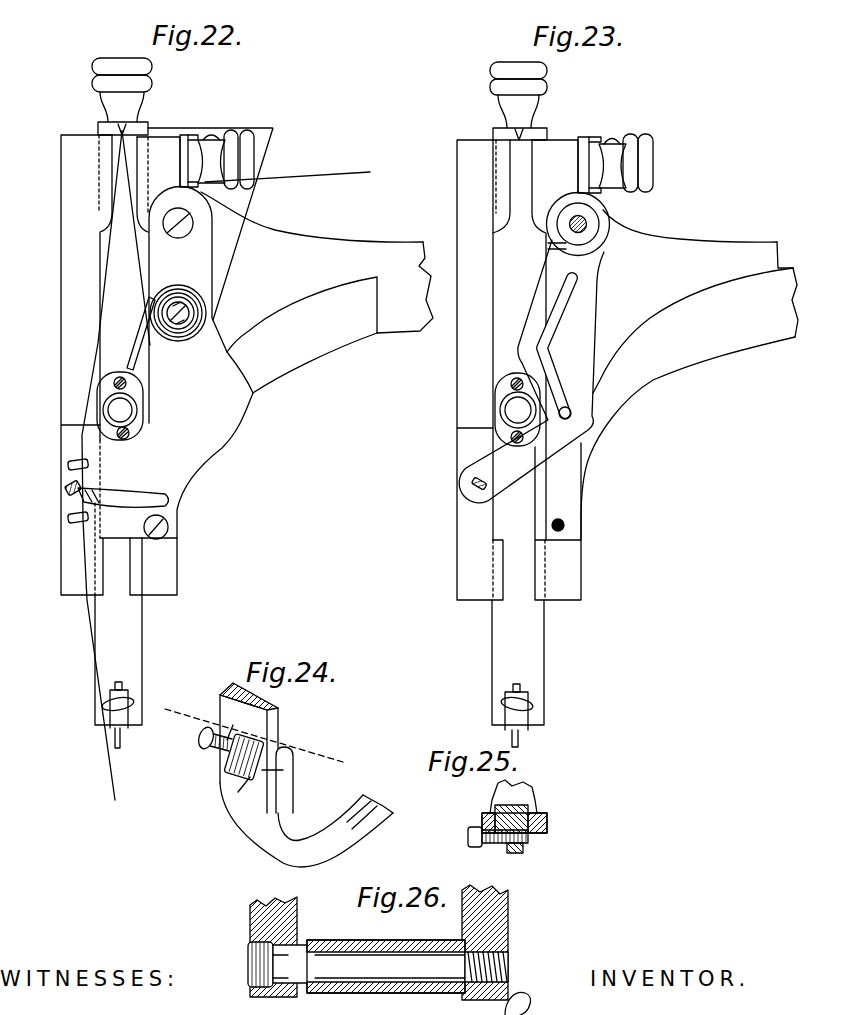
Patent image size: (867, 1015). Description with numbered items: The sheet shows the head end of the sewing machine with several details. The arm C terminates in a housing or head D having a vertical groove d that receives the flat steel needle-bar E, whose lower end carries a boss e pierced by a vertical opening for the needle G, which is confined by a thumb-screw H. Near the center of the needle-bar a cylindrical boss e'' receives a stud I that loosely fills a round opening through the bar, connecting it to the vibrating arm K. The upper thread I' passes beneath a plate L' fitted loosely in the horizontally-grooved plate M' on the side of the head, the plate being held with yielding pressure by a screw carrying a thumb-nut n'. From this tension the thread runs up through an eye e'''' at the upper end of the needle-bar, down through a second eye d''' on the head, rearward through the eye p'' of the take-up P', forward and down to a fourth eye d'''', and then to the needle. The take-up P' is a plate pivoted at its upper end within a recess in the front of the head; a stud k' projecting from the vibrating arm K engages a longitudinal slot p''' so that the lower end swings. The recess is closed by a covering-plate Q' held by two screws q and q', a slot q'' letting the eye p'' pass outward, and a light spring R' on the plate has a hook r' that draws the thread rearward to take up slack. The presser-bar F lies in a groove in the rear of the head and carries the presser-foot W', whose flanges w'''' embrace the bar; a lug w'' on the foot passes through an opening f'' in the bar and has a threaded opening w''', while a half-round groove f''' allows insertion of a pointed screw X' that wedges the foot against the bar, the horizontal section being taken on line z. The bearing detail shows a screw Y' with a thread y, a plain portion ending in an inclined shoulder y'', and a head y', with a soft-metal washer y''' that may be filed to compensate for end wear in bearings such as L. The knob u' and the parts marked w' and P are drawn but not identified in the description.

In FIG. 22, the knob u' is at (129, 90).
In FIG. 23, the knob u' is at (527, 95).
In FIG. 22, the eye e'''' is at (172, 125).
In FIG. 23, the eye e'''' is at (536, 128).
In FIG. 22, the housing or head D is at (129, 365).
In FIG. 23, the housing or head D is at (526, 370).
In FIG. 22, the vertical groove d is at (116, 465).
In FIG. 23, the vertical groove d is at (479, 340).
In FIG. 22, the needle-bar E is at (121, 431).
In FIG. 23, the needle-bar E is at (519, 432).
In FIG. 22, the horizontally-grooved plate M' is at (176, 161).
In FIG. 23, the horizontally-grooved plate M' is at (576, 165).
In FIG. 22, the plate L' is at (211, 159).
In FIG. 23, the plate L' is at (612, 164).
In FIG. 22, the thumb-nut n' is at (239, 159).
In FIG. 23, the thumb-nut n' is at (645, 163).
In FIG. 22, the hook r' is at (245, 214).
In FIG. 22, the upper thread I' is at (293, 172).
In FIG. 22, the covering-plate Q' is at (201, 305).
In FIG. 22, the screw q is at (195, 225).
In FIG. 23, the screw q is at (596, 238).
In FIG. 22, the arm C is at (305, 365).
In FIG. 23, the arm C is at (689, 375).
In FIG. 22, the vibrating arm K is at (302, 314).
In FIG. 23, the vibrating arm K is at (693, 330).
In FIG. 22, the light spring R' is at (198, 313).
In FIG. 22, the take-up P' is at (141, 333).
In FIG. 23, the take-up P' is at (550, 348).
In FIG. 22, the cylindrical boss e'' is at (120, 407).
In FIG. 23, the cylindrical boss e'' is at (517, 410).
In FIG. 22, the stud I is at (120, 410).
In FIG. 23, the stud I is at (518, 410).
In FIG. 22, the second eye d''' is at (60, 459).
In FIG. 22, the eye p'' is at (57, 488).
In FIG. 23, the eye p'' is at (494, 472).
In FIG. 22, the fourth eye d'''' is at (58, 519).
In FIG. 22, the slot q'' is at (123, 489).
In FIG. 22, the screw q' is at (171, 527).
In FIG. 22, the thumb-screw H is at (104, 704).
In FIG. 23, the thumb-screw H is at (534, 705).
In FIG. 22, the boss e is at (125, 682).
In FIG. 23, the boss e is at (523, 684).
In FIG. 22, the needle G is at (121, 742).
In FIG. 23, the needle G is at (519, 740).
In FIG. 23, the slot p''' is at (573, 345).
In FIG. 23, the stud k' is at (584, 408).
In FIG. 24, the presser-bar F is at (249, 748).
In FIG. 25, the presser-bar F is at (538, 838).
In FIG. 24, the opening f'' is at (286, 768).
In FIG. 24, the half-round groove f''' is at (232, 725).
In FIG. 24, the presser-foot W' is at (306, 825).
In FIG. 24, the section line z is at (250, 732).
In FIG. 24, the screw X' is at (206, 738).
In FIG. 25, the screw X' is at (486, 837).
In FIG. 24, the lug w'' is at (229, 759).
In FIG. 25, the lug w'' is at (516, 857).
In FIG. 24, the flanges w'''' is at (287, 777).
In FIG. 25, the flanges w'''' is at (566, 823).
In FIG. 24, the threaded opening w''' is at (233, 794).
In FIG. 25, the threaded opening w''' is at (467, 812).
In FIG. 25, the sleeve w' is at (513, 806).
In FIG. 26, the washer y''' is at (262, 947).
In FIG. 26, the bearings L is at (485, 942).
In FIG. 26, the shoulder y'' is at (288, 954).
In FIG. 26, the head y' is at (257, 965).
In FIG. 26, the sleeve P is at (386, 956).
In FIG. 26, the screw Y' is at (390, 966).
In FIG. 26, the screw-thread y is at (492, 967).